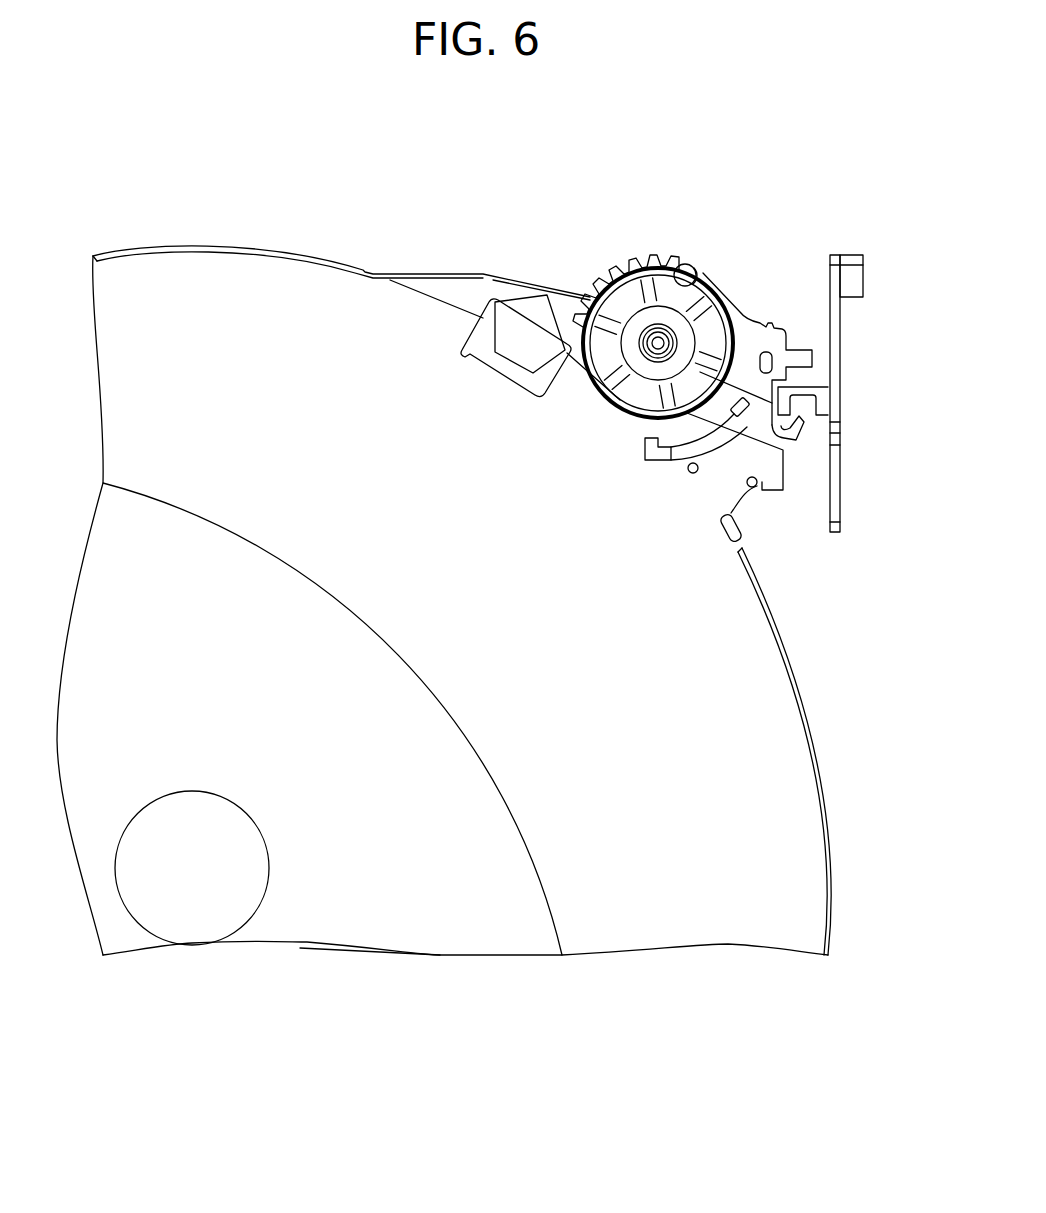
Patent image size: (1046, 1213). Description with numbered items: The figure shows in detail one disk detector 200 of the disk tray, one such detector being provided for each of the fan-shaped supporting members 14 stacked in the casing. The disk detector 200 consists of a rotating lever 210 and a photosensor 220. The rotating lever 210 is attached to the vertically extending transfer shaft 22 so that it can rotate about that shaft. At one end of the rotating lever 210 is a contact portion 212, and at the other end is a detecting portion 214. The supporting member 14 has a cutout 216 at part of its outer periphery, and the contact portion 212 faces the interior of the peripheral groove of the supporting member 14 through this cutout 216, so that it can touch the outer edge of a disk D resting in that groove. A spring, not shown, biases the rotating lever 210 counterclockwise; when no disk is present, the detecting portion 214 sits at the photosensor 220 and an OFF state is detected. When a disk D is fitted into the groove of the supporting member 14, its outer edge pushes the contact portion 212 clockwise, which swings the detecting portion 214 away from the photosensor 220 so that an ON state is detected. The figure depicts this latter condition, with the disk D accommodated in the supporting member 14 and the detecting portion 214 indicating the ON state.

The supporting member 14 is at (780, 735).
The transfer shaft 22 is at (658, 343).
The disk detector 200 is at (712, 238).
The rotating lever 210 is at (630, 408).
The contact portion 212 is at (527, 347).
The detecting portion 214 is at (795, 433).
The cutout 216 is at (490, 358).
The photosensor 220 is at (838, 378).
The disk D is at (402, 918).